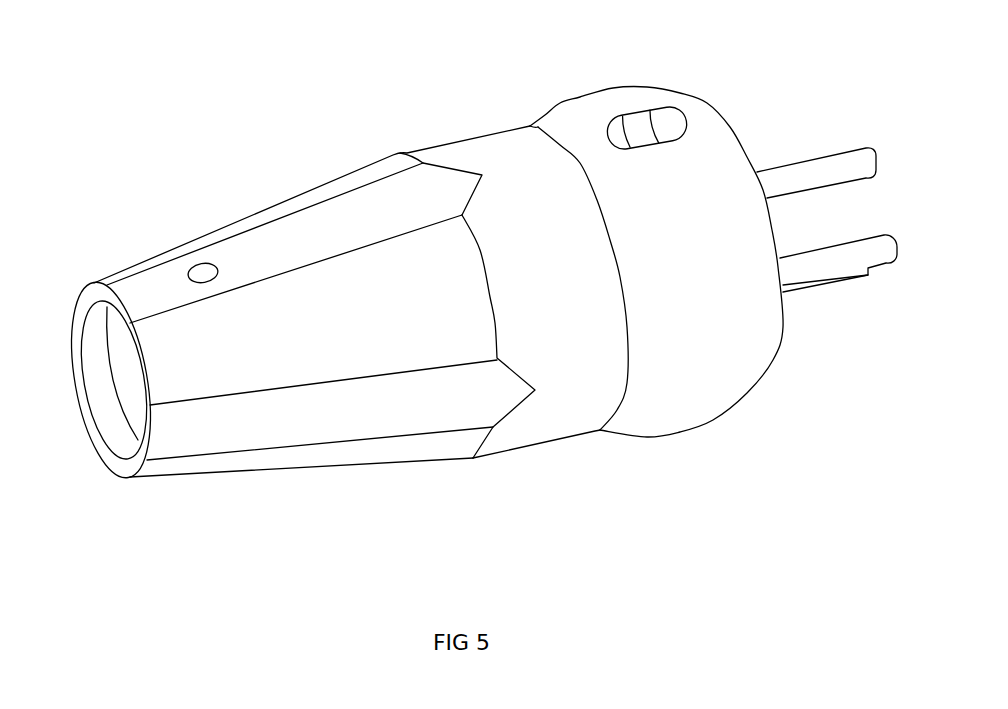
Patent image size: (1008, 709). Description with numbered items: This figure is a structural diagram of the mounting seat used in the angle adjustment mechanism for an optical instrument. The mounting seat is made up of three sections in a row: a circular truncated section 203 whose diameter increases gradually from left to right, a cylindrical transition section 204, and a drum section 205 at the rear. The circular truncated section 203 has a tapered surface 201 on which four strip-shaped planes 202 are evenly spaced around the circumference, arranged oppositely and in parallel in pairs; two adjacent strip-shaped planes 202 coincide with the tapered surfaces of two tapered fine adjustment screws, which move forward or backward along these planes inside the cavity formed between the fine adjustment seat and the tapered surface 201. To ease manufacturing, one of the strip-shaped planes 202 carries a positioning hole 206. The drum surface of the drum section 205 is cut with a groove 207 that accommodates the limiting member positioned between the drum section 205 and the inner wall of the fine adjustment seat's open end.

The tapered surface 201 is at (163, 348).
The strip-shaped plane 202 is at (365, 220).
The circular truncated section 203 is at (267, 468).
The cylindrical transition section 204 is at (538, 420).
The drum section 205 is at (698, 373).
The positioning hole 206 is at (203, 273).
The groove 207 is at (667, 127).